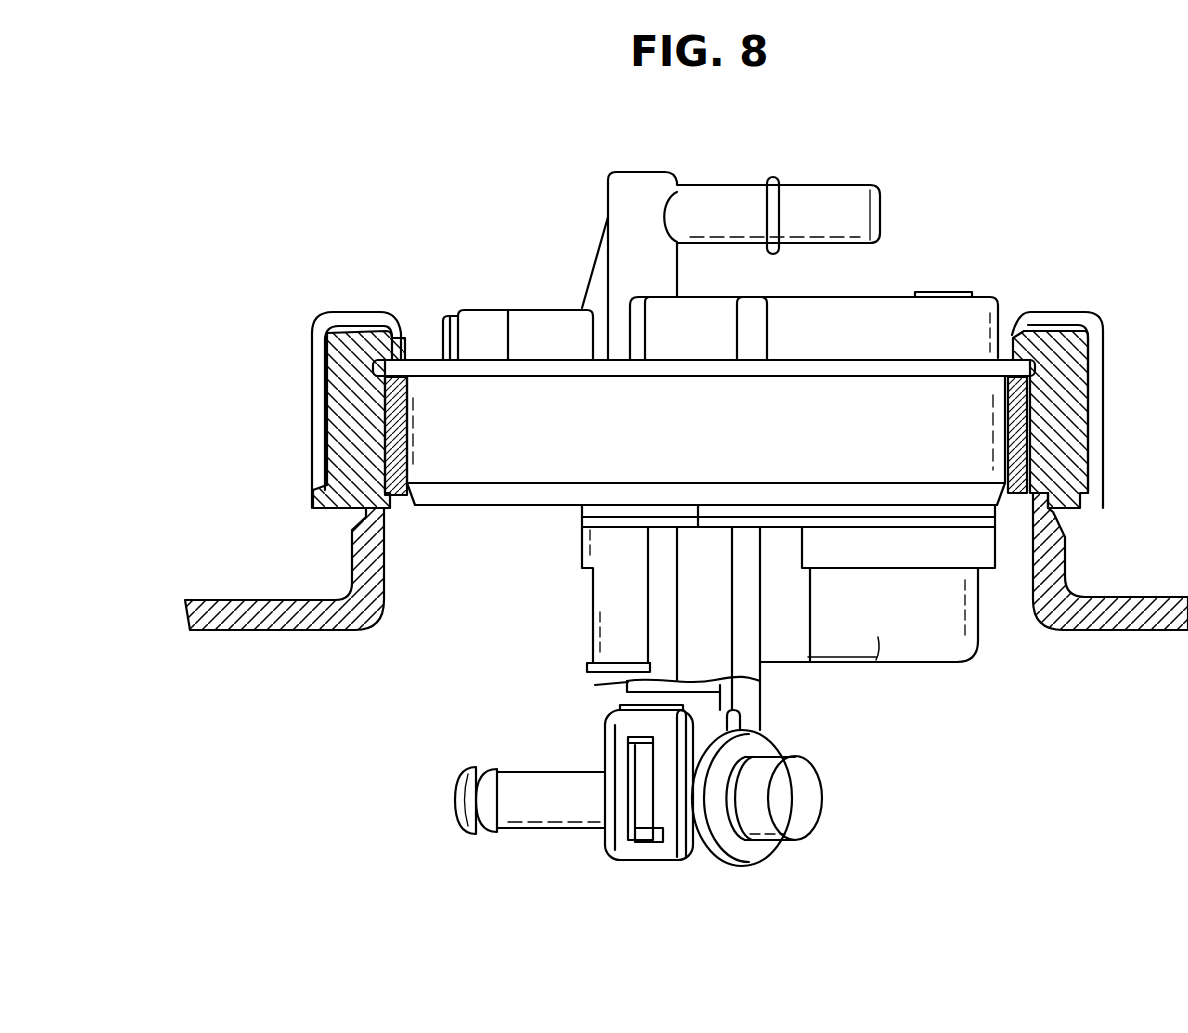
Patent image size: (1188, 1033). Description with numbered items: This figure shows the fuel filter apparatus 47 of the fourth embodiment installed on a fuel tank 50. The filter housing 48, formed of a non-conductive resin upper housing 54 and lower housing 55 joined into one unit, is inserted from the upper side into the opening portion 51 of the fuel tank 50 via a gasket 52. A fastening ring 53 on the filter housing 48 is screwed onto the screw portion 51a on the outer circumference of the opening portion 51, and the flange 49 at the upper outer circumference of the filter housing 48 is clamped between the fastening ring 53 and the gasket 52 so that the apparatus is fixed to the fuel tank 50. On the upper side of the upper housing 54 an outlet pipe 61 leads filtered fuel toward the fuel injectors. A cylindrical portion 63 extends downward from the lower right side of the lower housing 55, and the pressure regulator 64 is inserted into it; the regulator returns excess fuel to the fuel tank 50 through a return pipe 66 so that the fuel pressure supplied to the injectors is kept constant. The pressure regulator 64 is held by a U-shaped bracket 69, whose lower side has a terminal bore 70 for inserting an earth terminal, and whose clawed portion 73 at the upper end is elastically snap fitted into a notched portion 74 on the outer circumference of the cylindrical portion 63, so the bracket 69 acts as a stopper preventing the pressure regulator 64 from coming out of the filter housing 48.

The fuel filter apparatus 47 is at (957, 234).
The filter housing 48 is at (990, 293).
The flange 49 is at (425, 360).
The fuel tank 50 is at (247, 598).
The opening portion 51 is at (398, 510).
The screw portion 51a is at (360, 443).
The gasket 52 is at (342, 372).
The fastening ring 53 is at (340, 322).
The upper housing 54 is at (973, 417).
The lower housing 55 is at (977, 545).
The outlet pipe 61 is at (838, 185).
The cylindrical portion 63 is at (626, 690).
The pressure regulator 64 is at (758, 820).
The return pipe 66 is at (545, 771).
The bracket 69 is at (617, 806).
The terminal bore 70 is at (648, 842).
The clawed portion 73 is at (612, 745).
The notched portion 74 is at (643, 756).